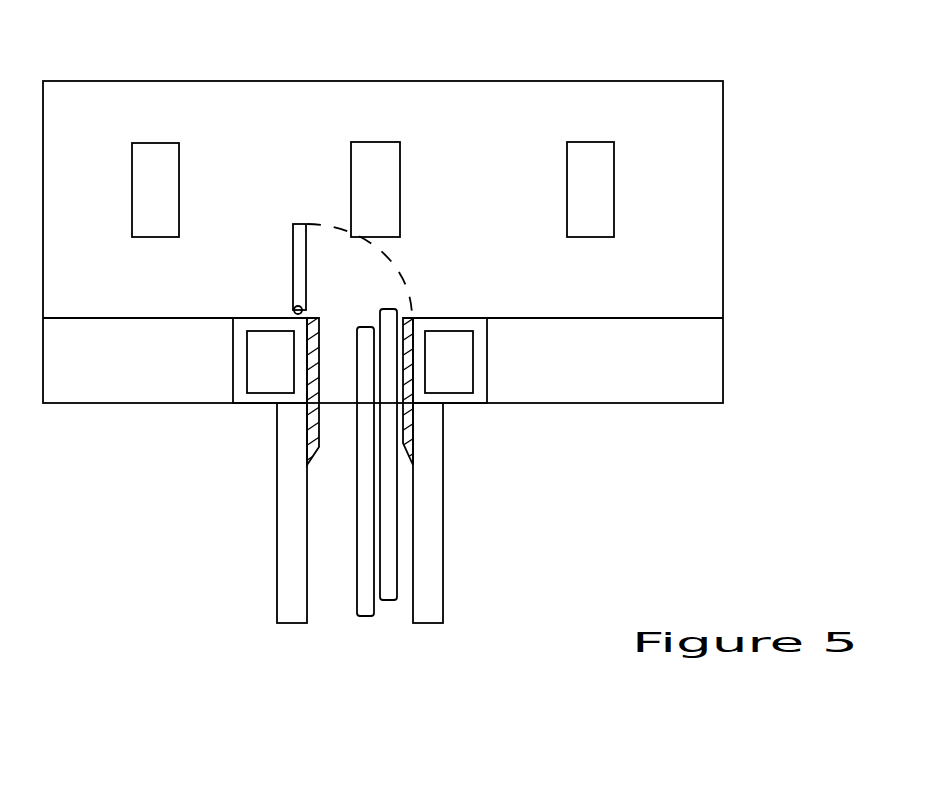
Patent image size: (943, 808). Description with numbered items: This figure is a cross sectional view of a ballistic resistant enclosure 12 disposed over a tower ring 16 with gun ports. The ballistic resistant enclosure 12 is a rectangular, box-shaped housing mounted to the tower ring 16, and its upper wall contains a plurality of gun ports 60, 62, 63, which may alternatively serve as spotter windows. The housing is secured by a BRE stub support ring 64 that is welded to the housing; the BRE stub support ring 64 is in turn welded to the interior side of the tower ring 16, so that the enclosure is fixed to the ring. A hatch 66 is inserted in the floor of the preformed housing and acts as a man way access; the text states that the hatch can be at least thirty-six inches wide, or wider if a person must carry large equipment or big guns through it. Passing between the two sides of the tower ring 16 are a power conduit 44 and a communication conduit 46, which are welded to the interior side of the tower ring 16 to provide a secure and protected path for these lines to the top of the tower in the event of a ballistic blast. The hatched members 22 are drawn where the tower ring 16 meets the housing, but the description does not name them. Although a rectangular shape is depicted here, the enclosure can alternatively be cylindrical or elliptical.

The ballistic resistant enclosure 12 is at (723, 182).
The tower ring 16 is at (277, 562).
The seals 22 is at (310, 440).
The power conduit 44 is at (362, 616).
The communication conduit 46 is at (394, 600).
The gun port 60 is at (614, 142).
The gun port 62 is at (400, 142).
The gun port 63 is at (179, 143).
The BRE stub support ring 64 is at (262, 372).
The hatch 66 is at (293, 268).